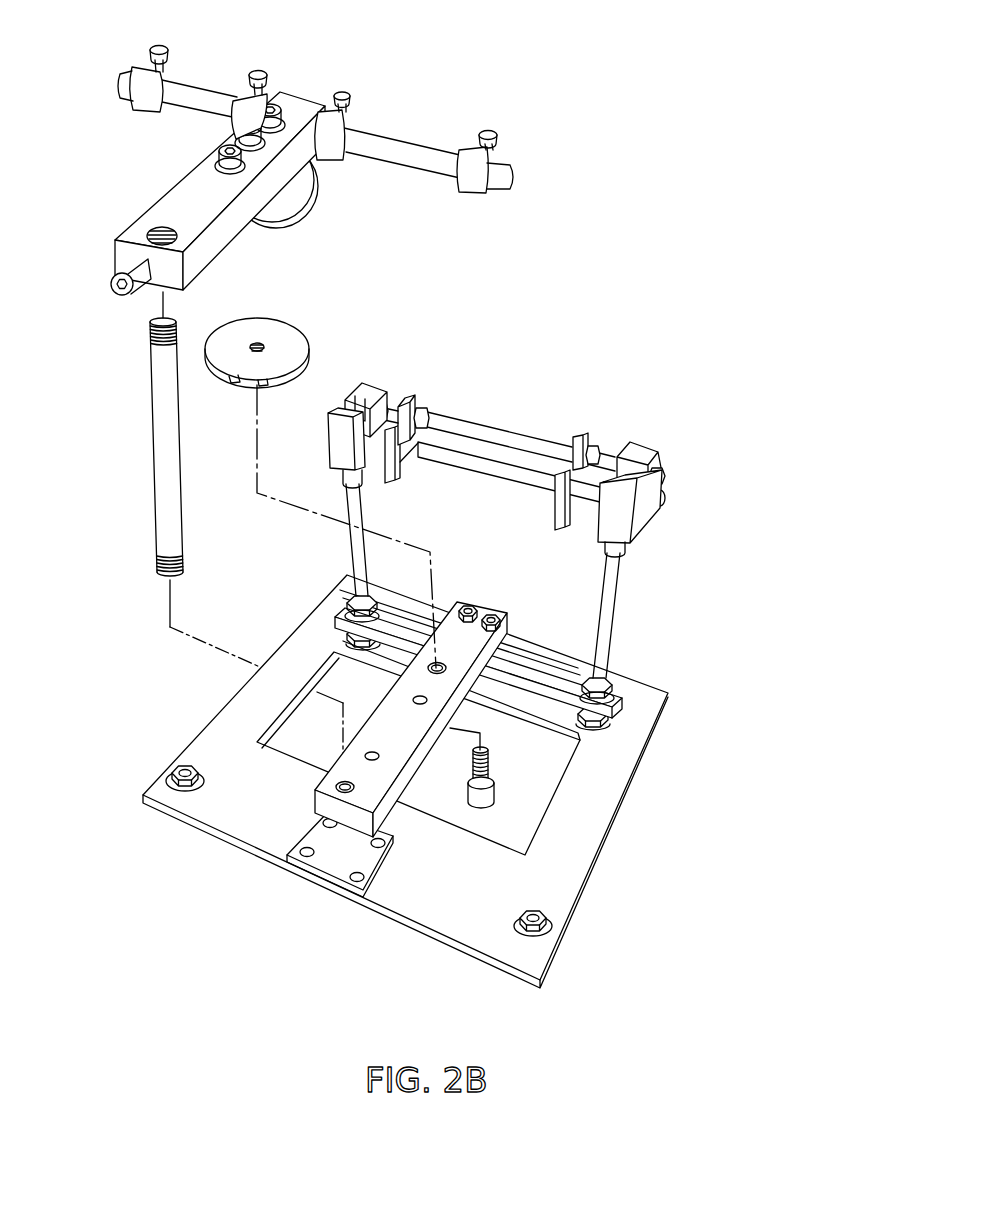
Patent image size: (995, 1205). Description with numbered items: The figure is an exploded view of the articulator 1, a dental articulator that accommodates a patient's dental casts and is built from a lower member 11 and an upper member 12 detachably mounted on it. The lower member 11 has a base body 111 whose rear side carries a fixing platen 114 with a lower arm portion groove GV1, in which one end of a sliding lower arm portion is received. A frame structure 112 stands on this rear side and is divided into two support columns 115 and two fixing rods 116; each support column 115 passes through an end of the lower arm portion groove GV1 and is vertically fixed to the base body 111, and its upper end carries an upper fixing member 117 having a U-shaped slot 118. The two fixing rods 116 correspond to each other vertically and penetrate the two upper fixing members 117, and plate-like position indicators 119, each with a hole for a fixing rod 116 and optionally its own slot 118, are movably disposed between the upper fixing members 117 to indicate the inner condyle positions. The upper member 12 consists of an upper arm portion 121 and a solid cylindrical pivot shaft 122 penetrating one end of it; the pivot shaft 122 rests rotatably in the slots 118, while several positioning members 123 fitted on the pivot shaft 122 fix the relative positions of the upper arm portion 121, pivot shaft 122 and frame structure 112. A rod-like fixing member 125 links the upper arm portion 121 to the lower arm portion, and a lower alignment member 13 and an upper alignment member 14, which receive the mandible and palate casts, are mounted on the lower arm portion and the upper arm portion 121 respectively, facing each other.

The articulator 1 is at (386, 509).
The lower member 11 is at (386, 781).
The base body 111 is at (565, 877).
The frame structure 112 is at (494, 515).
The fixing platen 114 is at (556, 660).
The support column 115 is at (350, 502).
The fixing rod 116 is at (470, 428).
The upper fixing member 117 is at (340, 445).
The slot 118 is at (358, 397).
The position indicator 119 is at (408, 466).
The upper member 12 is at (294, 349).
The upper arm portion 121 is at (165, 215).
The pivot shaft 122 is at (428, 157).
The positioning member 123 is at (152, 85).
The rod-like fixing member 125 is at (160, 392).
The lower alignment member 13 is at (294, 342).
The upper alignment member 14 is at (283, 222).
The lower arm portion groove GV1 is at (516, 656).